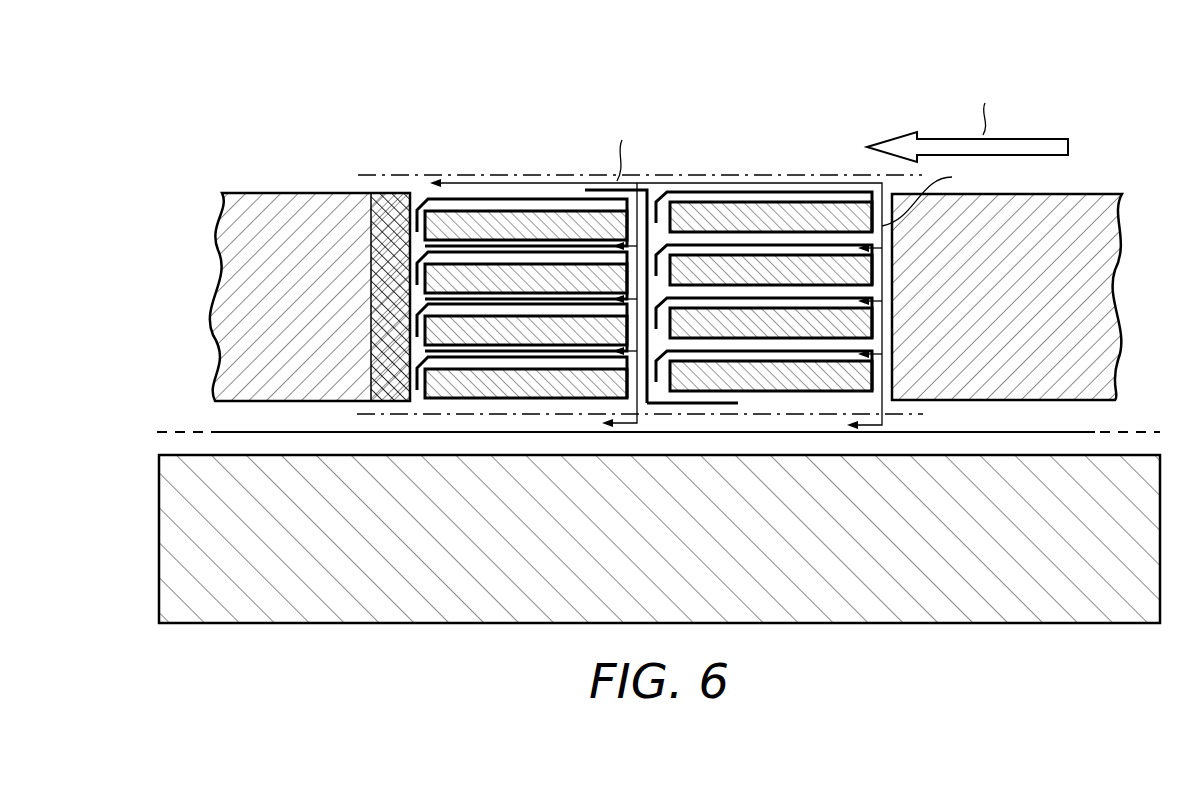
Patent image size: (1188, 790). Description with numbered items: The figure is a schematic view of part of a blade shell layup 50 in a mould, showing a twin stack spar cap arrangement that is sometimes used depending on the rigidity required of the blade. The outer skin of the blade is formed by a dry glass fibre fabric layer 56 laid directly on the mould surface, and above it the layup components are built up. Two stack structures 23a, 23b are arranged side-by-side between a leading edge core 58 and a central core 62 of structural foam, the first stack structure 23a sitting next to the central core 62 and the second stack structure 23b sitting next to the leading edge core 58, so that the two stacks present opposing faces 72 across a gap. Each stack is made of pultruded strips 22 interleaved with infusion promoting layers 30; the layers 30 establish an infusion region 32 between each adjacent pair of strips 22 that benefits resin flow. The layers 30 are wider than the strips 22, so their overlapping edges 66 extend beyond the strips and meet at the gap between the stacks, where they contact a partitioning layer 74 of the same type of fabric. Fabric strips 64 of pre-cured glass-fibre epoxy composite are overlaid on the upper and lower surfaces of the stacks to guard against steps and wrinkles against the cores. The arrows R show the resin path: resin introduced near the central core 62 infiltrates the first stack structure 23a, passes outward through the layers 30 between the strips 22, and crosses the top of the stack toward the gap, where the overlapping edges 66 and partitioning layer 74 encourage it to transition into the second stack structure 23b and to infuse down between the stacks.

The pultruded strip 22 is at (575, 273).
The first stack structure 23a is at (818, 103).
The second stack structure 23b is at (526, 103).
The infusion promoting layer 30 is at (500, 254).
The infusion region 32 is at (500, 312).
The layup 50 is at (1142, 126).
The fabric layer 56 is at (1095, 432).
The leading edge core 58 is at (261, 200).
The central core 62 is at (1097, 200).
The fabric strip 64 is at (366, 175).
The overlapping edge 66 is at (419, 203).
The opposing face 72 is at (627, 373).
The partitioning layer 74 is at (712, 403).